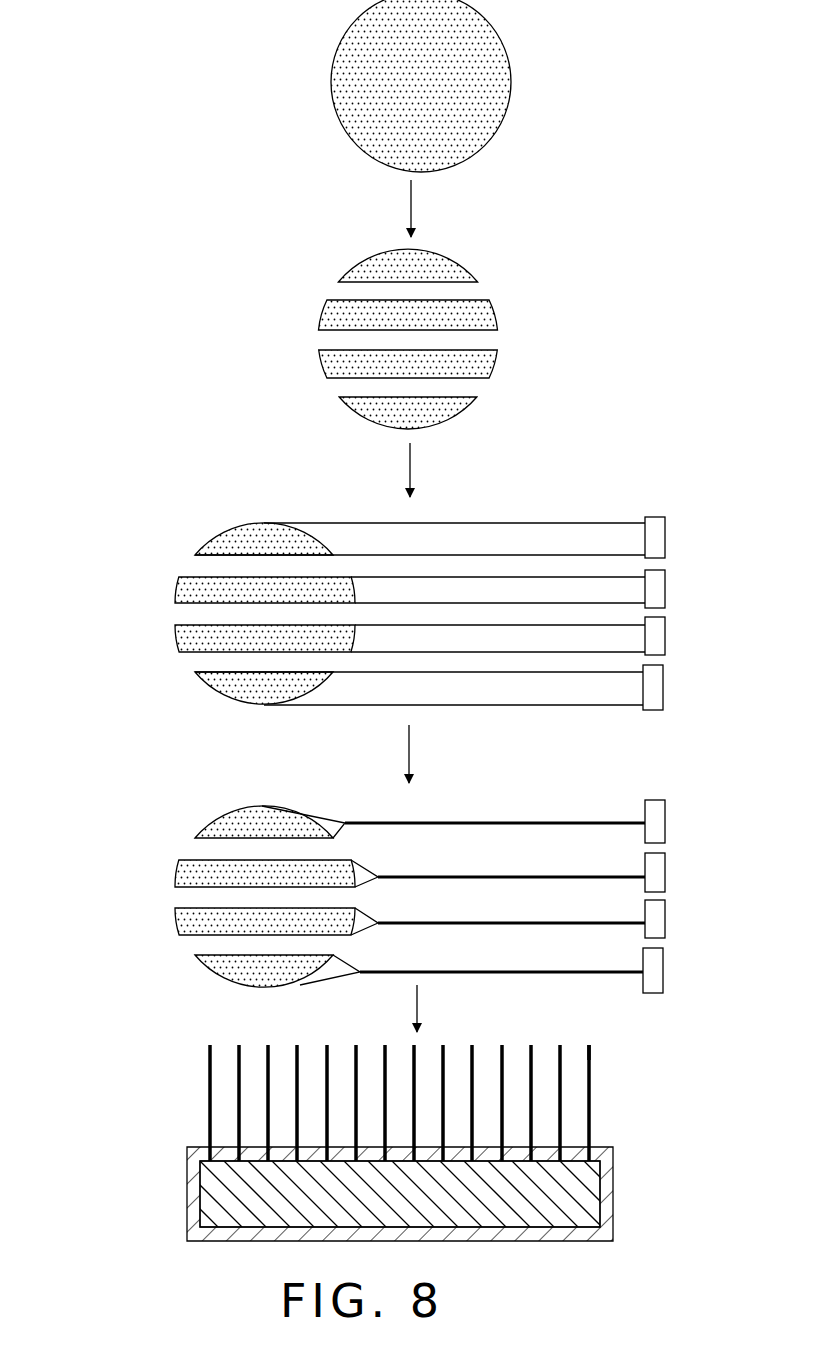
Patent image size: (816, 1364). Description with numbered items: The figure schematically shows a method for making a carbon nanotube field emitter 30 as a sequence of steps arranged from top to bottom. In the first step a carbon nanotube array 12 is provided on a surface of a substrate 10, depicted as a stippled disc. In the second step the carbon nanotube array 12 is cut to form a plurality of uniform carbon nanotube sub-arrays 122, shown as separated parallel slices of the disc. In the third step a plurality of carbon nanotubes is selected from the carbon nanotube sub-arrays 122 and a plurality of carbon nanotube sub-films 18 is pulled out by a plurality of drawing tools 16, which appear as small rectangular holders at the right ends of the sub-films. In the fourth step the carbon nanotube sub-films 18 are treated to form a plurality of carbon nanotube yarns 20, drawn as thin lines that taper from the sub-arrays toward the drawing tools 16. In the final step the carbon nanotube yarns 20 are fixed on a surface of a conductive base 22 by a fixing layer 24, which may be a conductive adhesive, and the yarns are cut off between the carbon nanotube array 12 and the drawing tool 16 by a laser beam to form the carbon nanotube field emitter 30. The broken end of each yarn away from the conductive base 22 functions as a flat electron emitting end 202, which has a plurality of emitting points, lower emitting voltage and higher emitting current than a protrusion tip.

The substrate 10 is at (512, 93).
The carbon nanotube array 12 is at (375, 45).
The carbon nanotube sub-arrays 122 is at (447, 270).
The carbon nanotube sub-films 18 is at (486, 538).
The drawing tools 16 is at (653, 523).
The carbon nanotube yarns 20 is at (495, 820).
The electron emitting end 202 is at (592, 1048).
The carbon nanotube field emitter 30 is at (363, 1162).
The conductive base 22 is at (197, 1185).
The fixing layer 24 is at (237, 1207).